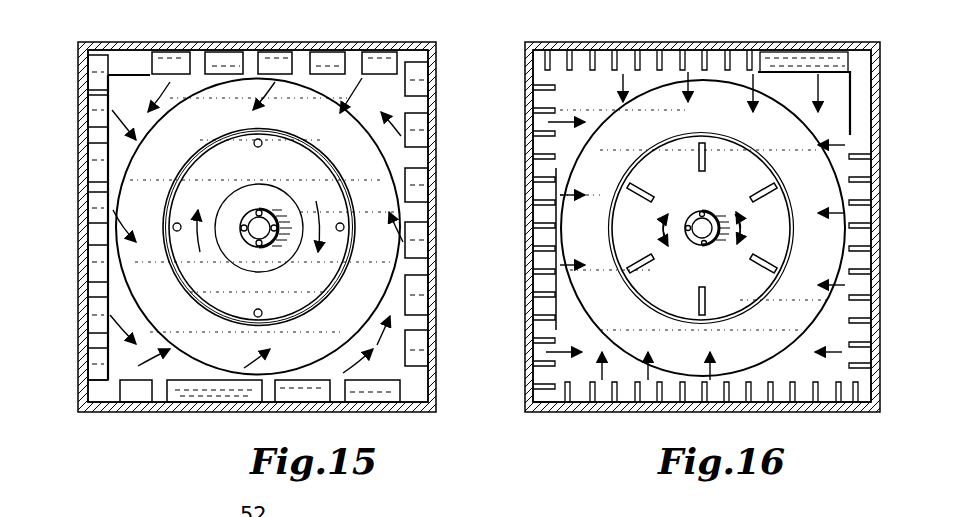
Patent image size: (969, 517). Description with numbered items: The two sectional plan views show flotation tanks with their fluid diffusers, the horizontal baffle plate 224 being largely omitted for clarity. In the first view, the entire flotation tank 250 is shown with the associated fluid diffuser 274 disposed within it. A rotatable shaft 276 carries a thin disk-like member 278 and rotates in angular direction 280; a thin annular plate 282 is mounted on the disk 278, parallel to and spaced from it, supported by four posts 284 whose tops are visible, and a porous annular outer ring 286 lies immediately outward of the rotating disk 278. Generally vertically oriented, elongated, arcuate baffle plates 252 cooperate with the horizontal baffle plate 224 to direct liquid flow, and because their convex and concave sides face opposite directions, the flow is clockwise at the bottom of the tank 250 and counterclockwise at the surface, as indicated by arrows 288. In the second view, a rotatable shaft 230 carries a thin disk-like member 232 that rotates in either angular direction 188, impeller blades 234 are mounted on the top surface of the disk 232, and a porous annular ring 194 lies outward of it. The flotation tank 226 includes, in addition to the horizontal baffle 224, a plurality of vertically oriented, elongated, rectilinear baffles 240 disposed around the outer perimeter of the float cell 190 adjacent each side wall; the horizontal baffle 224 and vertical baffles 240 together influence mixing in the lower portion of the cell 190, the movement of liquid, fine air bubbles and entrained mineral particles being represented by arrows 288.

In FIG. 15, the flotation tank 250 is at (306, 44).
In FIG. 15, the horizontal baffle plate 224 is at (140, 60).
In FIG. 16, the horizontal baffle plate 224 is at (872, 136).
In FIG. 15, the arcuate baffle plates 252 is at (288, 60).
In FIG. 15, the fluid diffuser 274 is at (388, 173).
In FIG. 15, the porous annular outer ring 286 is at (378, 306).
In FIG. 15, the thin annular plate 282 is at (231, 189).
In FIG. 15, the thin disk-like member 278 is at (264, 200).
In FIG. 15, the rotatable shaft 276 is at (271, 217).
In FIG. 15, the angular direction 280 is at (314, 232).
In FIG. 15, the posts 284 is at (262, 140).
In FIG. 15, the arrows 288 is at (110, 118).
In FIG. 16, the arrows 288 is at (573, 262).
In FIG. 15, the float cell 190 is at (80, 350).
In FIG. 16, the float cell 190 is at (536, 346).
In FIG. 16, the flotation tank 226 is at (637, 45).
In FIG. 16, the rectilinear baffles 240 is at (573, 66).
In FIG. 16, the porous annular ring 194 is at (804, 317).
In FIG. 16, the thin disk-like member 232 is at (721, 280).
In FIG. 16, the rotatable shaft 230 is at (707, 214).
In FIG. 16, the angular direction 188 is at (670, 228).
In FIG. 16, the impeller blades 234 is at (647, 264).